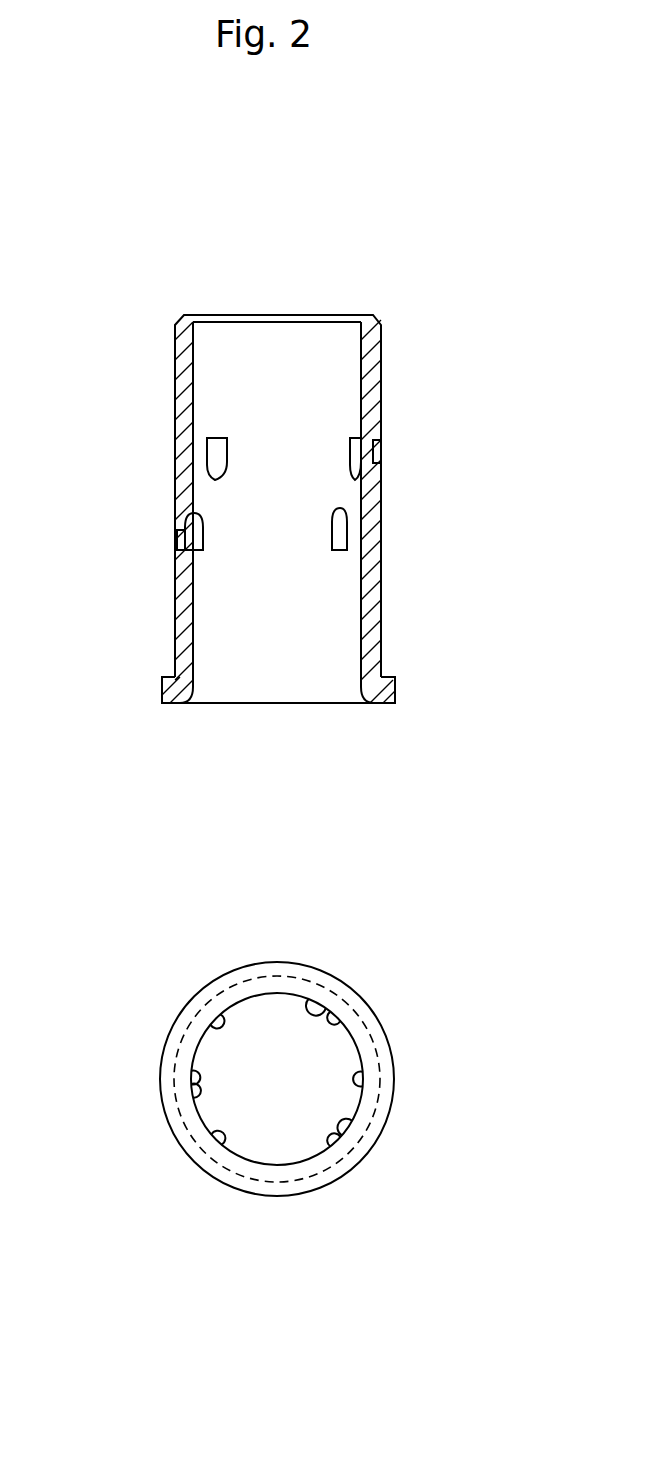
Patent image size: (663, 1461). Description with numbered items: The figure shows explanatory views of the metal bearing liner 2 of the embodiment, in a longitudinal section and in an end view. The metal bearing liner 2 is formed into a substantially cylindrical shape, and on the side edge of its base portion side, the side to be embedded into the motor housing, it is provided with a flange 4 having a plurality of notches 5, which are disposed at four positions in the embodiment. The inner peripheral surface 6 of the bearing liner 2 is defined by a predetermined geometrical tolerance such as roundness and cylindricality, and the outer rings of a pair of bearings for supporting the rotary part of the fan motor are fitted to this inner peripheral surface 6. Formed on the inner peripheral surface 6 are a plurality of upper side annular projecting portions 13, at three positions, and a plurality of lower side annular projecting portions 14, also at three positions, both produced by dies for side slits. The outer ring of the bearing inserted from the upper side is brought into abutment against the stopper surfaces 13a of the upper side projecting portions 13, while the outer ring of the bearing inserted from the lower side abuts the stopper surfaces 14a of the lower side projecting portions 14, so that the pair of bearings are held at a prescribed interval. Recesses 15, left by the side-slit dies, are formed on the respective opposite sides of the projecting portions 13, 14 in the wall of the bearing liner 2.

The metal bearing liner 2 is at (420, 330).
The flange 4 is at (162, 695).
The notches 5 is at (206, 1002).
The inner peripheral surface 6 is at (360, 637).
The upper side annular projecting portions 13 is at (354, 452).
The stopper surfaces 13a is at (215, 438).
The lower side annular projecting portions 14 is at (347, 535).
The stopper surfaces 14a is at (337, 552).
The recesses 15 is at (378, 452).